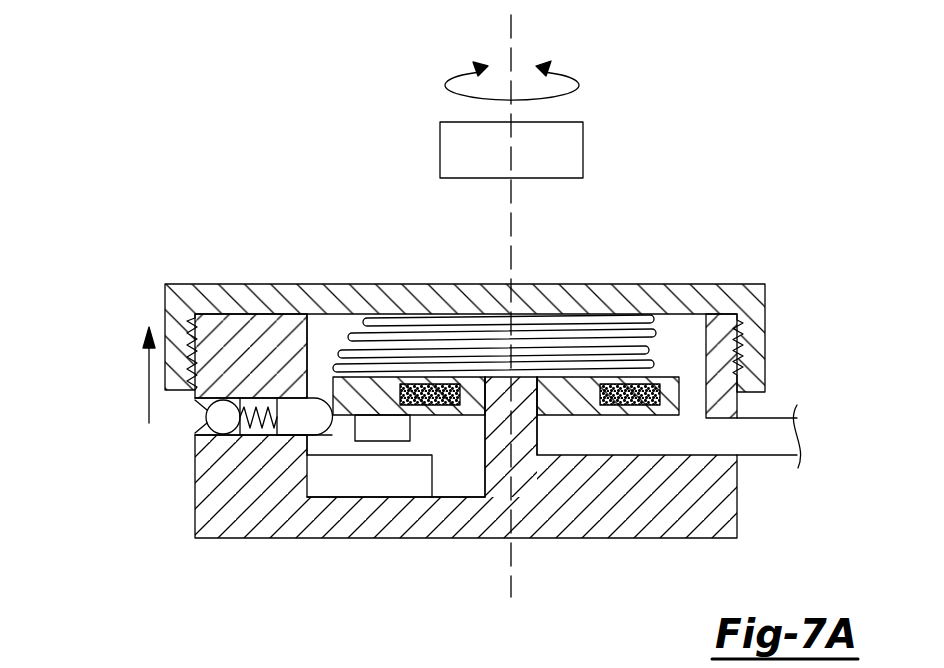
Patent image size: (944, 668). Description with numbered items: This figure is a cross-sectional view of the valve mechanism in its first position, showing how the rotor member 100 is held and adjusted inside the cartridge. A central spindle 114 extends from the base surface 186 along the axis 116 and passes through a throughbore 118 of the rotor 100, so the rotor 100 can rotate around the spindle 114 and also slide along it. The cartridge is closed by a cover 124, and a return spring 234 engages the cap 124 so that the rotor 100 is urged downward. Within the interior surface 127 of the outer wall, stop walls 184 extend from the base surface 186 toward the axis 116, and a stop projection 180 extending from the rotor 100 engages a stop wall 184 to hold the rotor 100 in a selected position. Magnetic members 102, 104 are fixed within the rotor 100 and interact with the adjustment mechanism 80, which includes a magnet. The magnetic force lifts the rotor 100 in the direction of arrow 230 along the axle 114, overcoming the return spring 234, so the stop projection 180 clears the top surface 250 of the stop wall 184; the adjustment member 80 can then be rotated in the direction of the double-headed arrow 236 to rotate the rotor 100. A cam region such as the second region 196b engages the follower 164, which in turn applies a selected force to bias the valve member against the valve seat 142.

The adjustment mechanism 80 is at (440, 138).
The rotor member 100 is at (652, 373).
The magnetic member 102 is at (425, 405).
The magnetic member 104 is at (652, 398).
The central spindle 114 is at (540, 437).
The axis 116 is at (511, 37).
The throughbore 118 is at (537, 397).
The cover 124 is at (200, 284).
The interior surface 127 is at (308, 328).
The valve seat 142 is at (195, 414).
The follower 164 is at (294, 398).
The stop projection 180 is at (380, 425).
The stop wall 184 is at (357, 483).
The base surface 186 is at (336, 492).
The second region 196b is at (330, 384).
The arrow 230 is at (147, 380).
The return spring 234 is at (671, 369).
The double-headed arrow 236 is at (560, 100).
The top surface 250 is at (336, 450).